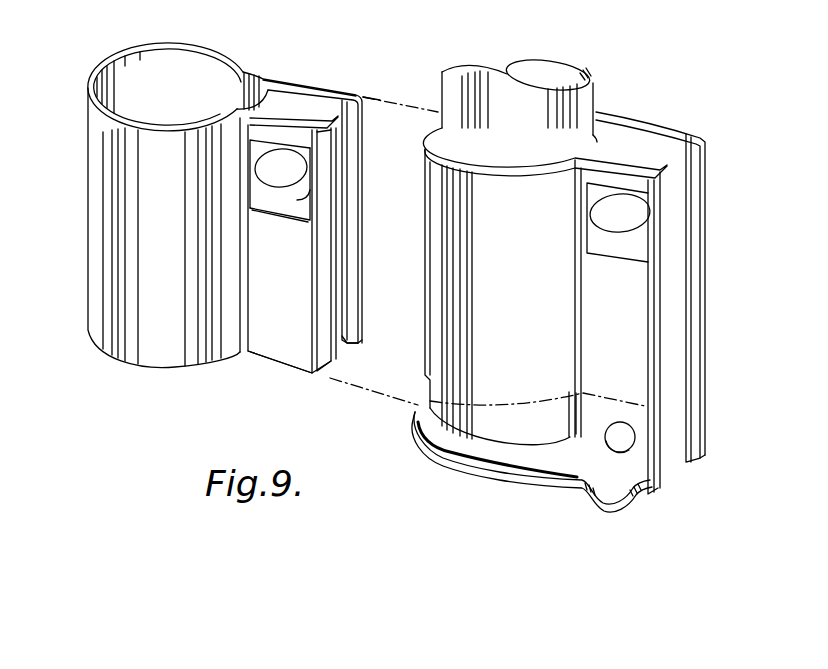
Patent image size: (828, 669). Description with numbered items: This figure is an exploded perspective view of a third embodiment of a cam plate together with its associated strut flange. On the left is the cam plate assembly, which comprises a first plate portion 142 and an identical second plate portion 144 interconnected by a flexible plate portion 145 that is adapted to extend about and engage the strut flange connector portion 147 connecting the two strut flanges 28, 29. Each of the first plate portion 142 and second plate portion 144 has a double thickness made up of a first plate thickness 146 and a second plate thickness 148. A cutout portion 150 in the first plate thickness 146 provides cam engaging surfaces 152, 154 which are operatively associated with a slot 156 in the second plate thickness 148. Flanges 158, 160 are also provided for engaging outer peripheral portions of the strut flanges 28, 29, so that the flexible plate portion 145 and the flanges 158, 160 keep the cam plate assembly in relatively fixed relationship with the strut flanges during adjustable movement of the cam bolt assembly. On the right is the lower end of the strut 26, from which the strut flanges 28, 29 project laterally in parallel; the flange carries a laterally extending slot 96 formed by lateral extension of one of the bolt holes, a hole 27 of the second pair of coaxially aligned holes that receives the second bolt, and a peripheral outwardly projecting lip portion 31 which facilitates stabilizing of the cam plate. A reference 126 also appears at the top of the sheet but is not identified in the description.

The first plate portion 142 is at (288, 324).
The second plate portion 144 is at (323, 90).
The flexible plate portion 145 is at (148, 44).
The first plate thickness 146 is at (263, 82).
The second plate thickness 148 is at (275, 113).
The cutout portion 150 is at (302, 207).
The cam engaging surface 152 is at (262, 191).
The cam engaging surface 154 is at (303, 197).
The slot 156 is at (292, 172).
The flange 158 is at (323, 375).
The flange 160 is at (350, 340).
The upper component 126 is at (355, 50).
The strut 26 is at (585, 97).
The hole 27 is at (627, 445).
The strut flange 28 is at (682, 313).
The strut flange 29 is at (626, 361).
The peripheral outwardly projecting lip portion 31 is at (610, 503).
The slot 96 is at (640, 220).
The strut flange connector portion 147 is at (447, 293).